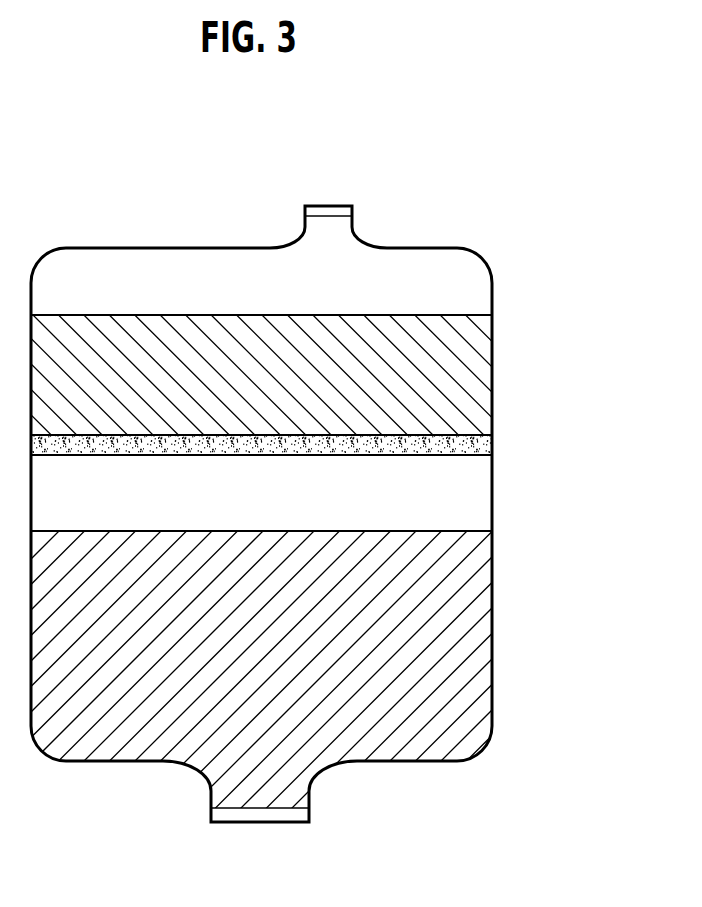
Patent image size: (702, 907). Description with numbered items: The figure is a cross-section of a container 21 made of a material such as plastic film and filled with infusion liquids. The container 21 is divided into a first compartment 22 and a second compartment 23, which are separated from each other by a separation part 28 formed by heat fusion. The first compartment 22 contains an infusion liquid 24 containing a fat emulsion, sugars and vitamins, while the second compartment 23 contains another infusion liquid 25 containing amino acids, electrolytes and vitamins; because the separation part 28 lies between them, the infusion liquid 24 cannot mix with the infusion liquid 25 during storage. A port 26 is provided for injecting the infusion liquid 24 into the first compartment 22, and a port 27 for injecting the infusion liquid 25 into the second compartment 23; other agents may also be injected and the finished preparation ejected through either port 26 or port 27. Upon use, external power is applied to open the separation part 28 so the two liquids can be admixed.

The container 21 is at (488, 197).
The first compartment 22 is at (470, 498).
The second compartment 23 is at (467, 290).
The infusion liquid 24 is at (470, 612).
The infusion liquid 25 is at (478, 362).
The port 26 is at (309, 812).
The port 27 is at (341, 208).
The separation part 28 is at (492, 443).